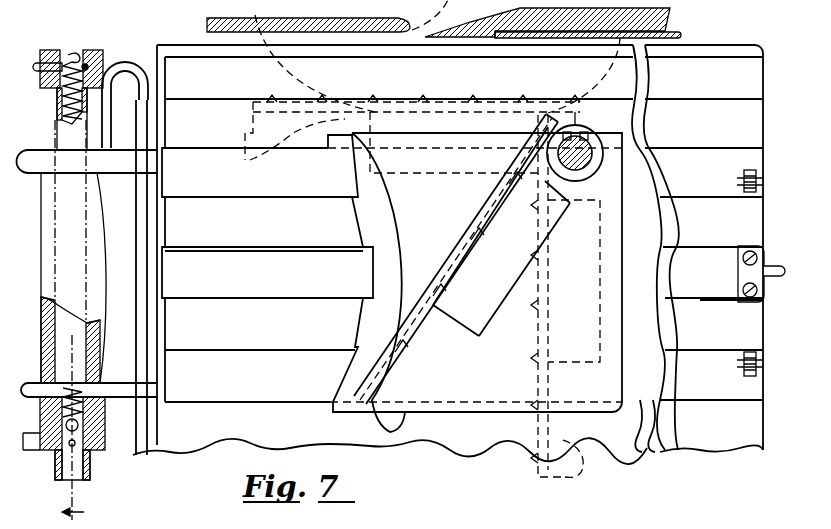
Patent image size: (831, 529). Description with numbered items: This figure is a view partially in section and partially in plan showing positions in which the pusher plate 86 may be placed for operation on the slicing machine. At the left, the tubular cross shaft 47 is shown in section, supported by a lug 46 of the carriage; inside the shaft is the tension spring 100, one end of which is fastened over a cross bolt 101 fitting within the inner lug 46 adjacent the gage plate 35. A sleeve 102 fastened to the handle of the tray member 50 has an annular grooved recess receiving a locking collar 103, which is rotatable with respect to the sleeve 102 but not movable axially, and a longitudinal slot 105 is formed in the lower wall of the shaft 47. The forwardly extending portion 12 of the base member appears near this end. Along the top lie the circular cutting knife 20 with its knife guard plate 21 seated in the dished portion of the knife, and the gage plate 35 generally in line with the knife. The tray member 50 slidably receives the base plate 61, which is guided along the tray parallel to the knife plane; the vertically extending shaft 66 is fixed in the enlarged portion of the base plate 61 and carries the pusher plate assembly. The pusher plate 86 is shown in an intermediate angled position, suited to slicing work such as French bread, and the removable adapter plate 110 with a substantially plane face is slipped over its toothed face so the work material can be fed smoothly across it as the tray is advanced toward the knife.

The cross bolt 101 is at (37, 64).
The lugs 46 is at (88, 48).
The tension spring 100 is at (62, 95).
The tubular cross shaft 47 is at (78, 132).
The sleeve 102 is at (48, 410).
The forwardly extending portion 12 is at (86, 432).
The locking collar 103 is at (103, 445).
The longitudinal slot 105 is at (92, 480).
The gage plate 35 is at (262, 17).
The circular cutting knife 20 is at (663, 7).
The knife guard plate 21 is at (683, 33).
The shaft 66 is at (622, 133).
The adapter plate 110 is at (437, 270).
The pusher plate 86 is at (433, 312).
The base plate 61 is at (443, 390).
The tray member 50 is at (698, 388).